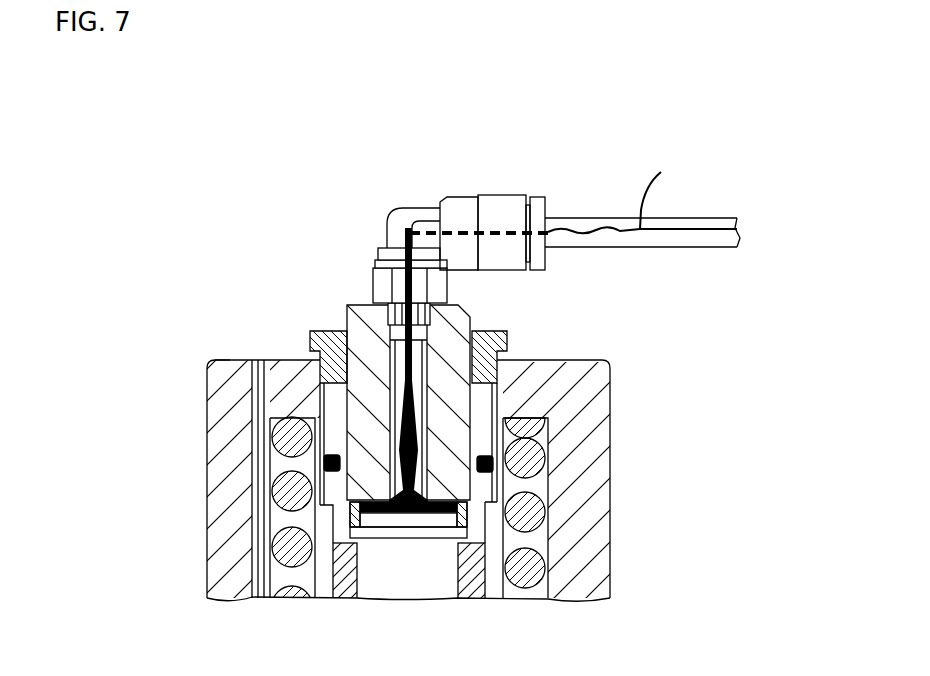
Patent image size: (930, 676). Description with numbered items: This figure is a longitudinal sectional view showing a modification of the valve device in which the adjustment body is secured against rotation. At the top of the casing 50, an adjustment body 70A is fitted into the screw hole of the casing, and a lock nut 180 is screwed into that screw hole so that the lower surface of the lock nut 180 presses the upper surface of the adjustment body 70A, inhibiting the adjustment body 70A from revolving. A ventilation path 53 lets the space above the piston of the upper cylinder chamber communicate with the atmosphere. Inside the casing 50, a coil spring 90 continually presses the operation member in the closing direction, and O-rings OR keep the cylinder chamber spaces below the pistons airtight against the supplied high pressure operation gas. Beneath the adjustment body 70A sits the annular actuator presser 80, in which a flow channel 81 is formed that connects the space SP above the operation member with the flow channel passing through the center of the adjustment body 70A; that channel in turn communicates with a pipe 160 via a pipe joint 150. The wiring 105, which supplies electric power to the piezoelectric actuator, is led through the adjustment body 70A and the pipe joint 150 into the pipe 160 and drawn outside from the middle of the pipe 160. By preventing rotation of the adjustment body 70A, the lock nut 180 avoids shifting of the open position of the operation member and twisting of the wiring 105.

The casing 50 is at (617, 531).
The ventilation path 53 is at (215, 358).
The adjustment body 70A is at (341, 313).
The actuator presser 80 is at (344, 517).
The flow channel 81 is at (490, 505).
The coil spring 90 is at (554, 456).
The O-ring OR is at (494, 458).
The wiring 105 is at (640, 220).
The pipe joint 150 is at (503, 213).
The pipe 160 is at (693, 228).
The lock nut 180 is at (508, 335).